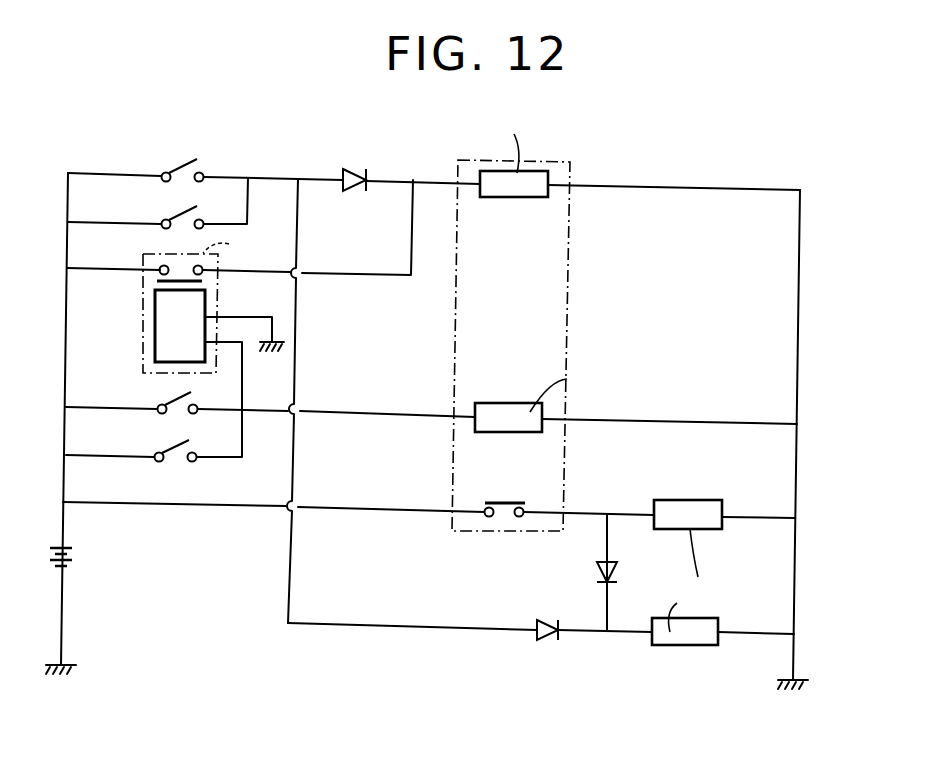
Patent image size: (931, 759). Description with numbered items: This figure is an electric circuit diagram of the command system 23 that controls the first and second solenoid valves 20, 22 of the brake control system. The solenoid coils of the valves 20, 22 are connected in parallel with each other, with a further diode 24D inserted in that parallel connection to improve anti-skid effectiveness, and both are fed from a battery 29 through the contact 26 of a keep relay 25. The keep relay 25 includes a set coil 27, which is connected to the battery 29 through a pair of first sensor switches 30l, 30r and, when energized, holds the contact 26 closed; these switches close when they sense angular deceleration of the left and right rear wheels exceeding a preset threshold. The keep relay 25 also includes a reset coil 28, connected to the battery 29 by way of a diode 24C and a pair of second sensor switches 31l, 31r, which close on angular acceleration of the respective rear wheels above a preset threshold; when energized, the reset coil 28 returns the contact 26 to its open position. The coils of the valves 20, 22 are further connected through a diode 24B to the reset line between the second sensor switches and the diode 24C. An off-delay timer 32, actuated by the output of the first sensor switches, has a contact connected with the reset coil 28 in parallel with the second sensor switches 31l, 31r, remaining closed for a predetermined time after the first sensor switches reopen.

The first solenoid valve 20 is at (683, 500).
The second solenoid valve 22 is at (686, 645).
The command system 23 is at (603, 150).
The diode 24B is at (545, 641).
The diode 24C is at (352, 166).
The diode 24D is at (615, 571).
The keep relay 25 is at (570, 282).
The contact 26 is at (501, 503).
The set coil 27 is at (502, 403).
The reset coil 28 is at (513, 197).
The battery 29 is at (73, 551).
The first sensor switch 30l is at (175, 398).
The first sensor switch 30r is at (172, 446).
The second sensor switch 31l is at (187, 162).
The second sensor switch 31r is at (187, 217).
The off-delay timer 32 is at (143, 320).